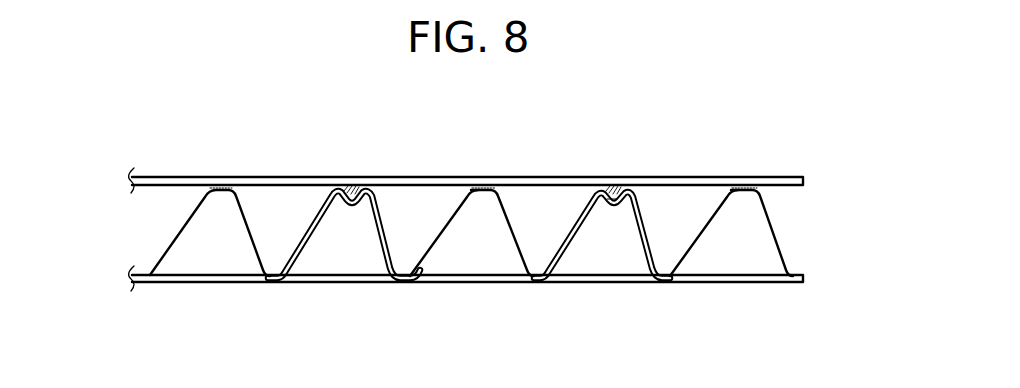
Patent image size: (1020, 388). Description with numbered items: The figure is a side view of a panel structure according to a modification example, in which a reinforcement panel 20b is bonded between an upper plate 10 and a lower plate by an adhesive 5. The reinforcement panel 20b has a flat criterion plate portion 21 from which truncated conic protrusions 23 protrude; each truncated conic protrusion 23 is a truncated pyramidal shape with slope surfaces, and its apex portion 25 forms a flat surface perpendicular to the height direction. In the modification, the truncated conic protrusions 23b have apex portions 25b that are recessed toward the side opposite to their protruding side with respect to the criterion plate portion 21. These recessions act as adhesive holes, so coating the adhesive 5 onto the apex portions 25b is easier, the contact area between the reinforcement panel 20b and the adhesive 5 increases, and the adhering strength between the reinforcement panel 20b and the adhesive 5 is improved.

The first plate (upper plate) 10 is at (149, 166).
The reinforcement panel 20b is at (139, 292).
The adhesive 5 is at (488, 188).
The criterion plate portion 21 is at (430, 272).
The truncated conic protrusion 23 is at (513, 237).
The truncated conic protrusion 23b is at (643, 237).
The apex portion 25 is at (478, 193).
The apex portion 25b is at (610, 200).